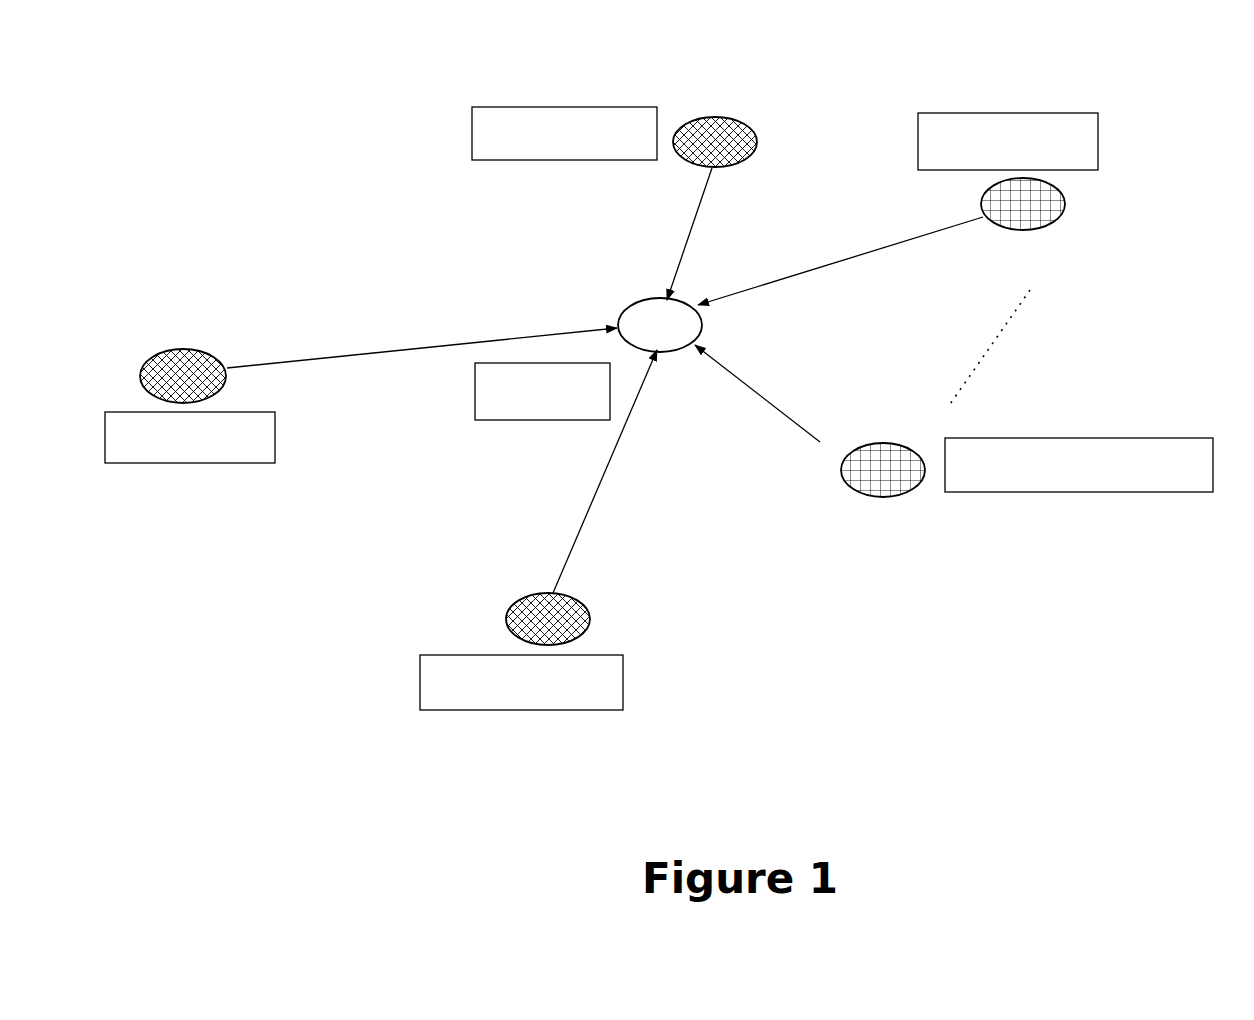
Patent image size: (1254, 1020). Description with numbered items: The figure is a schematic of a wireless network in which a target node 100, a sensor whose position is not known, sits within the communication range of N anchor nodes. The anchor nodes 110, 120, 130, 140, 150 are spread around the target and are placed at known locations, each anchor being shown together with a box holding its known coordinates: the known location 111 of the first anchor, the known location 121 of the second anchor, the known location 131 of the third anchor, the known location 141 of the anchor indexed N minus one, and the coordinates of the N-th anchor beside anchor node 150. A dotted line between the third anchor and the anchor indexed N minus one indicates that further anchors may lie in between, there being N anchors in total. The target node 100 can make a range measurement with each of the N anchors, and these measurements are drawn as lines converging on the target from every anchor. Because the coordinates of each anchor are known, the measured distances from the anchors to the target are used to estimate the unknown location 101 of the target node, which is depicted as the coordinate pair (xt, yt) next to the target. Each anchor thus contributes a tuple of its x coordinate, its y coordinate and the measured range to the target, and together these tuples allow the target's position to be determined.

The target node 100 is at (628, 297).
The unknown location of the target node 101 is at (578, 422).
The anchor node 110 is at (193, 350).
The known location of anchor node 111 is at (285, 450).
The anchor node 120 is at (750, 133).
The known location of anchor node 121 is at (520, 107).
The anchor node 130 is at (1040, 220).
The known location of anchor node 131 is at (1023, 113).
The anchor node 140 is at (895, 507).
The known location of anchor node 141 is at (1137, 438).
The anchor node 150 is at (507, 610).